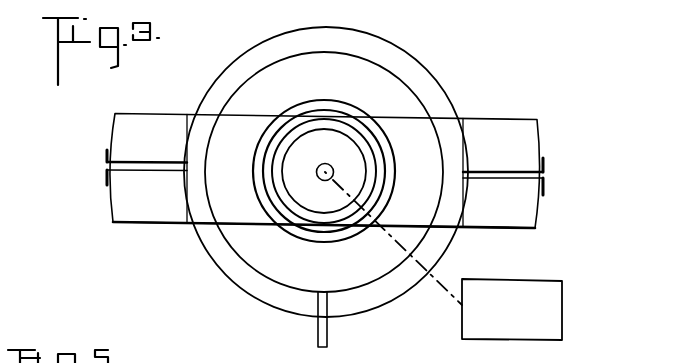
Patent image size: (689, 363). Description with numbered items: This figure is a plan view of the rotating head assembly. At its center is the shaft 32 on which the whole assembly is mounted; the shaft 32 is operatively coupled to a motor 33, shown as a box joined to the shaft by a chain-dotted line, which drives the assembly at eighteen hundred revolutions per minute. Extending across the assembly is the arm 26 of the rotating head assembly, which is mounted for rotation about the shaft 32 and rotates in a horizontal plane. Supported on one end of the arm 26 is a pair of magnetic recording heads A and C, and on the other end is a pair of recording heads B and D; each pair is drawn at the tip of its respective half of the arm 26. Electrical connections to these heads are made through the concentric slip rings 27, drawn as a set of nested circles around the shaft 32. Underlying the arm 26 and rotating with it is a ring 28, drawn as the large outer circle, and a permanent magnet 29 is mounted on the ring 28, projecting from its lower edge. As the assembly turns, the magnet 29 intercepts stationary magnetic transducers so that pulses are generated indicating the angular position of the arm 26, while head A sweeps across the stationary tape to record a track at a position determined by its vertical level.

The arm 26 is at (257, 122).
The concentric slip rings 27 is at (352, 115).
The ring 28 is at (373, 310).
The permanent magnet 29 is at (317, 344).
The shaft 32 is at (325, 163).
The motor 33 is at (562, 283).
The magnetic recording head A is at (107, 153).
The magnetic recording head B is at (545, 188).
The magnetic recording head C is at (107, 178).
The magnetic recording head D is at (545, 167).